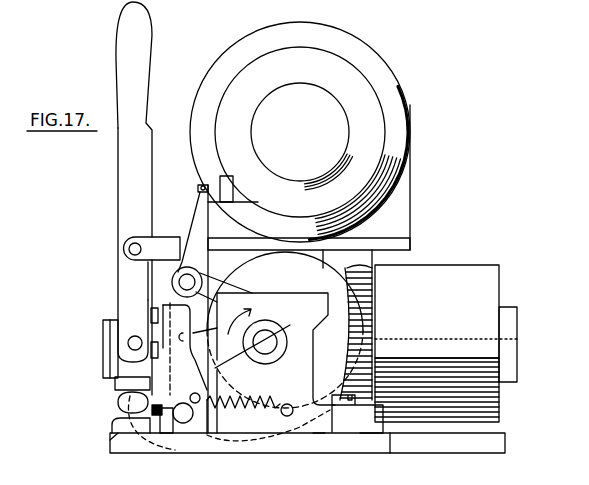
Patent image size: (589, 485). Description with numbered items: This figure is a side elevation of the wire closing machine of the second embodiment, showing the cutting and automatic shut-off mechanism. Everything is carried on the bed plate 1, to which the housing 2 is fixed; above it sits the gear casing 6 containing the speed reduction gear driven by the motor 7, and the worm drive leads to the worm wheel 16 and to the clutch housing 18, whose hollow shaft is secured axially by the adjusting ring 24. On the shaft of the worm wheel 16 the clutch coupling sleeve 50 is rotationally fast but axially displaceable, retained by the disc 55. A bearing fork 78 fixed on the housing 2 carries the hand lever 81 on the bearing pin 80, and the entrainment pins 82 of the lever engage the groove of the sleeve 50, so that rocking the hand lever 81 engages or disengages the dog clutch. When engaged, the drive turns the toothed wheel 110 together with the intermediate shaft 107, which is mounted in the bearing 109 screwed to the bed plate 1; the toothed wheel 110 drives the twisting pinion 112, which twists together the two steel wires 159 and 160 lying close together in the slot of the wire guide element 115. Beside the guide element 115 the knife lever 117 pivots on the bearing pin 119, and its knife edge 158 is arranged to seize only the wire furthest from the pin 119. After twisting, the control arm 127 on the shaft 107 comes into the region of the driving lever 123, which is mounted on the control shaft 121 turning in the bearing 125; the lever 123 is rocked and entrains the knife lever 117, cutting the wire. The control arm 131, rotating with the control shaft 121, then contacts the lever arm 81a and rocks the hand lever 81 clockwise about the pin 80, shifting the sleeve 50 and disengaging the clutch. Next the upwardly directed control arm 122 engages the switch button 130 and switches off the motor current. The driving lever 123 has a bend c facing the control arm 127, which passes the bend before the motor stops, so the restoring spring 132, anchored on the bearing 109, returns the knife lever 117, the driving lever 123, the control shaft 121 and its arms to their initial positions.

The bed plate 1 is at (500, 443).
The housing 2 is at (303, 253).
The gear casing 6 is at (400, 197).
The motor 7 is at (371, 63).
The worm wheel 16 is at (363, 323).
The clutch housing 18 is at (427, 275).
The adjusting ring 24 is at (507, 321).
The clutch coupling sleeve 50 is at (118, 376).
The disc 55 is at (109, 331).
The bearing fork 78 is at (164, 248).
The bearing pin 80 is at (121, 250).
The hand lever 81 is at (118, 166).
The lever arm 81a is at (120, 293).
The entrainment pins 82 is at (128, 342).
The intermediate shaft 107 is at (265, 340).
The bearing 109 is at (368, 428).
The toothed wheel 110 is at (313, 430).
The twisting pinion 112 is at (160, 440).
The wire guide element 115 is at (113, 420).
The knife lever 117 is at (207, 430).
The bearing pin 119 is at (183, 425).
The control shaft 121 is at (173, 280).
The control arm 122 is at (197, 190).
The driving lever 123 is at (208, 328).
The bearing 125 is at (230, 283).
The control arm 127 is at (218, 370).
The switch button 130 is at (219, 190).
The control arm 131 is at (150, 304).
The restoring spring 132 is at (274, 401).
The knife edge 158 is at (122, 394).
The steel wire 159 is at (112, 438).
The steel wire 160 is at (150, 405).